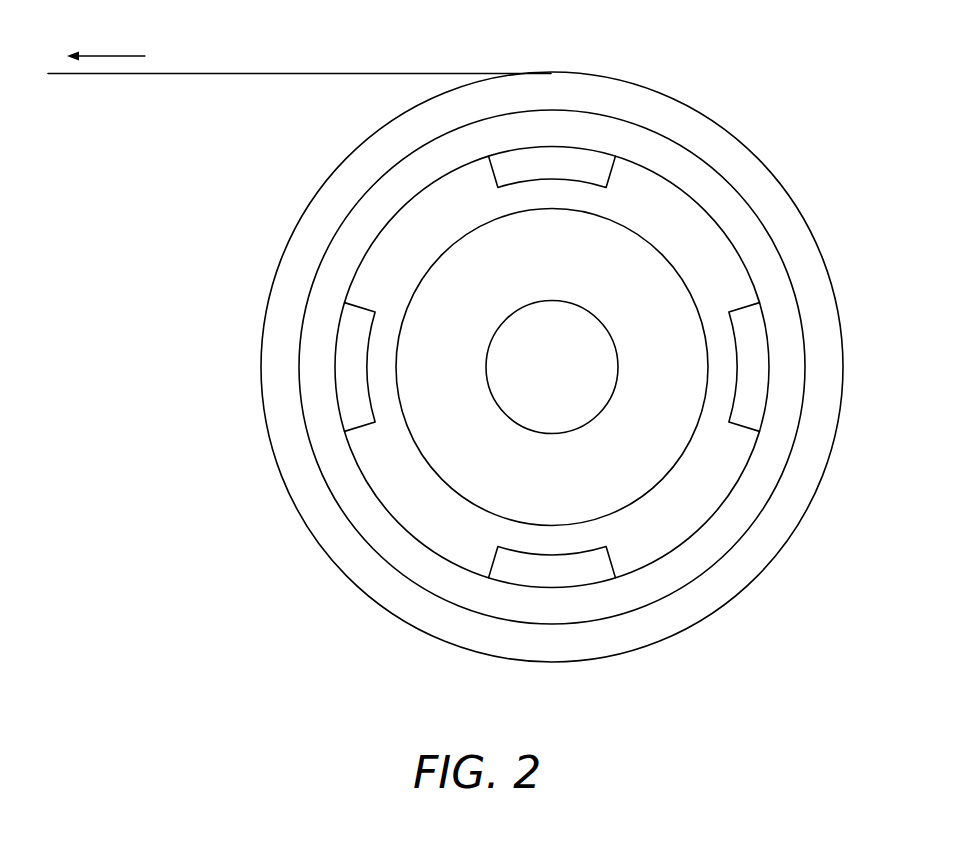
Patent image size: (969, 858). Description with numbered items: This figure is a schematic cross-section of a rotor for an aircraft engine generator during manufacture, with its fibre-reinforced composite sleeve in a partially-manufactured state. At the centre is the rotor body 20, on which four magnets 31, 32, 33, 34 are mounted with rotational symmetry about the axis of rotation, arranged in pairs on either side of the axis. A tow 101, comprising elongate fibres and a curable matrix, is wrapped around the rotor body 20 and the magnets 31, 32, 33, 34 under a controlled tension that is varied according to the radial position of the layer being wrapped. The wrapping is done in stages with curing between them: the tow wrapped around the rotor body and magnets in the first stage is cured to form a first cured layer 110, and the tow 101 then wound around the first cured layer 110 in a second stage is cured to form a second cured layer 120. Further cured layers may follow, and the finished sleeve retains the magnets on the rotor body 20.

The tow 101 is at (258, 73).
The rotor body 20 is at (642, 457).
The magnet 31 is at (552, 160).
The magnet 32 is at (758, 369).
The magnet 33 is at (550, 577).
The magnet 34 is at (345, 367).
The first cured layer 110 is at (350, 498).
The second cured layer 120 is at (383, 587).